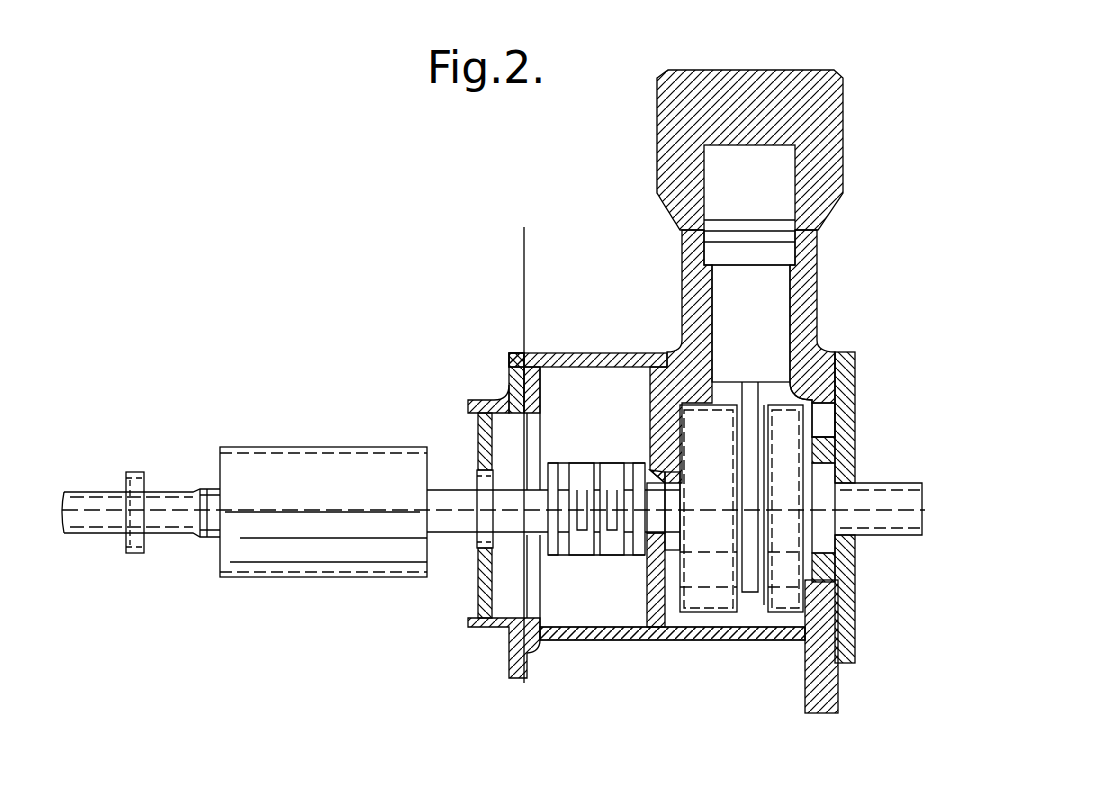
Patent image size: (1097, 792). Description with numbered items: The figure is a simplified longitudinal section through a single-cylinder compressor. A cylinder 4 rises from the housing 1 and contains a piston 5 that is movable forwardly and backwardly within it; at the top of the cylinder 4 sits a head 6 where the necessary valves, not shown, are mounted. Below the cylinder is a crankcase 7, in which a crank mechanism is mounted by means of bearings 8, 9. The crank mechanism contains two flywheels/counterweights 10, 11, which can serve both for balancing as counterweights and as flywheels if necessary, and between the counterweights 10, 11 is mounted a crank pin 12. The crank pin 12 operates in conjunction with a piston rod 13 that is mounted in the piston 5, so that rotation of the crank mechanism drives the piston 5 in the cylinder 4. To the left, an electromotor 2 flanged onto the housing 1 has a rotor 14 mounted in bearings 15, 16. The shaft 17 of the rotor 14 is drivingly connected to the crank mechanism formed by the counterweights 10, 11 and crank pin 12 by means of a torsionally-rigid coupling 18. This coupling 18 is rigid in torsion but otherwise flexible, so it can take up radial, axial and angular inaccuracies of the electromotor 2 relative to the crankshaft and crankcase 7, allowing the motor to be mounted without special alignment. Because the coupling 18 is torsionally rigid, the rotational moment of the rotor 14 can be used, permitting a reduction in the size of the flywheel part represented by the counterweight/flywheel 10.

The housing 1 is at (519, 240).
The electromotor 2 is at (457, 388).
The cylinder 4 is at (818, 268).
The piston 5 is at (783, 308).
The head 6 is at (803, 72).
The crankcase 7 is at (714, 641).
The bearing 8 is at (648, 588).
The bearing 9 is at (825, 497).
The counterweight/flywheel 10 is at (695, 427).
The counterweight/flywheel 11 is at (800, 597).
The crank pin 12 is at (762, 595).
The piston rod 13 is at (800, 385).
The rotor 14 is at (290, 580).
The bearing 15 is at (138, 472).
The bearing 16 is at (477, 480).
The shaft 17 is at (478, 588).
The torsionally-rigid coupling 18 is at (592, 558).